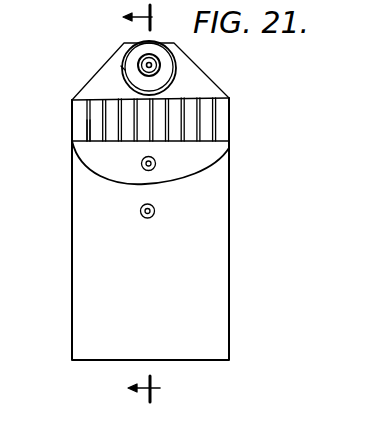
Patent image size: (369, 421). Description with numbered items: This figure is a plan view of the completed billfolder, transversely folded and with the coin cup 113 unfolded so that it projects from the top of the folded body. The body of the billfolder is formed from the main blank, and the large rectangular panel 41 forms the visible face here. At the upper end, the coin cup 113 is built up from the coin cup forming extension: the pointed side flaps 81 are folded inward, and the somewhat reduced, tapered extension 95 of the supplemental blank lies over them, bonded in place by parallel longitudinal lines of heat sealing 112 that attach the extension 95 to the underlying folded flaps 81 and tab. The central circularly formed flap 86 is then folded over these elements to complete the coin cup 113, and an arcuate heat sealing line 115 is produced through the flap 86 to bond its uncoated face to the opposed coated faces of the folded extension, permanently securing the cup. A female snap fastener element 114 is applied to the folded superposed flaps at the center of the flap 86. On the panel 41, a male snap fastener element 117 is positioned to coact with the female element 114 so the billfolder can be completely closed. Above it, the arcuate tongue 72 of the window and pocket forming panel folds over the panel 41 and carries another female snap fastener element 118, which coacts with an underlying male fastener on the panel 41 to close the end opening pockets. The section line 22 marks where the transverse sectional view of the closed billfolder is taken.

The section line 22 is at (128, 203).
The panel 41 is at (154, 268).
The arcuate tongue 72 is at (116, 172).
The pointed side flaps 81 is at (73, 110).
The central circularly formed flap 86 is at (170, 62).
The reduced extension 95 is at (205, 117).
The longitudinal lines of heat sealing 112 is at (88, 128).
The coin cup 113 is at (196, 87).
The female snap fastener element 114 is at (151, 62).
The arcuate heat sealing line 115 is at (121, 68).
The male snap fastener element 117 is at (155, 211).
The female snap fastener element 118 is at (156, 163).